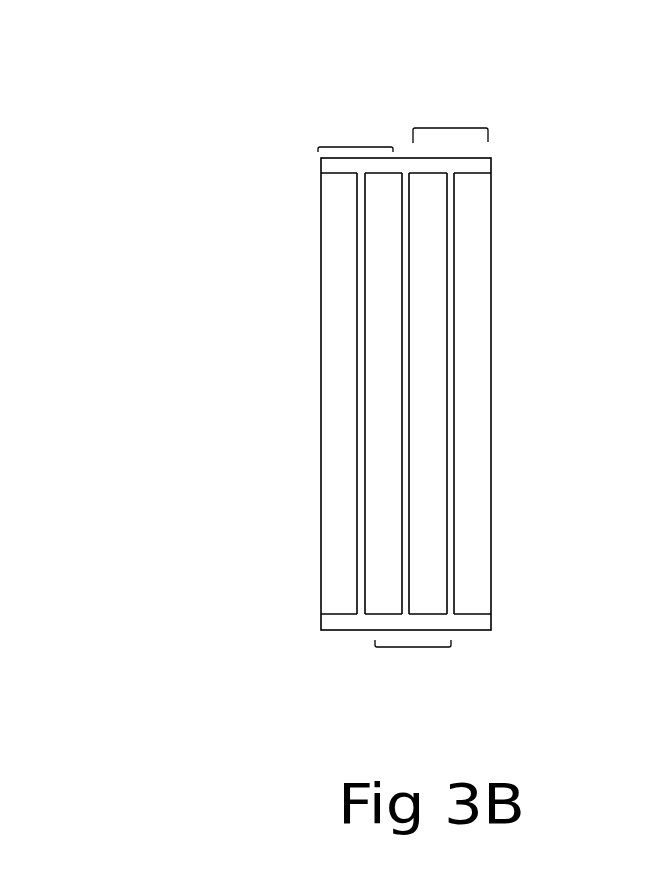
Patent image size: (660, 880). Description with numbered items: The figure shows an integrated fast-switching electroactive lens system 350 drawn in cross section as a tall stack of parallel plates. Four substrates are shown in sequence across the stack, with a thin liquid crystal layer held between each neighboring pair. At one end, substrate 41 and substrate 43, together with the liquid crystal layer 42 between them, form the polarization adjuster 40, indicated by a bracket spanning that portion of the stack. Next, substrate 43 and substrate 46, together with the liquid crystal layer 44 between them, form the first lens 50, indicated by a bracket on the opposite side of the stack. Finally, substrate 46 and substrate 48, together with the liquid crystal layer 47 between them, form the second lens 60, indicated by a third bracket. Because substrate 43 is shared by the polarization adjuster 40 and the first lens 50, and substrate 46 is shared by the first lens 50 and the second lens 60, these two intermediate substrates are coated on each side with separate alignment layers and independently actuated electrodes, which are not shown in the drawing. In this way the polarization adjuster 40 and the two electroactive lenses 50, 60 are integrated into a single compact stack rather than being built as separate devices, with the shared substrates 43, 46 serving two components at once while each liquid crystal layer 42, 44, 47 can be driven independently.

The integrated fast-switching electroactive lens system 350 is at (258, 308).
The polarization adjuster 40 is at (357, 147).
The substrate 41 is at (339, 193).
The liquid crystal layer 42 is at (360, 608).
The substrate 43 is at (380, 189).
The liquid crystal layer 44 is at (407, 610).
The substrate 46 is at (423, 190).
The liquid crystal layer 47 is at (448, 612).
The substrate 48 is at (473, 191).
The first lens 50 is at (415, 652).
The second lens 60 is at (450, 127).